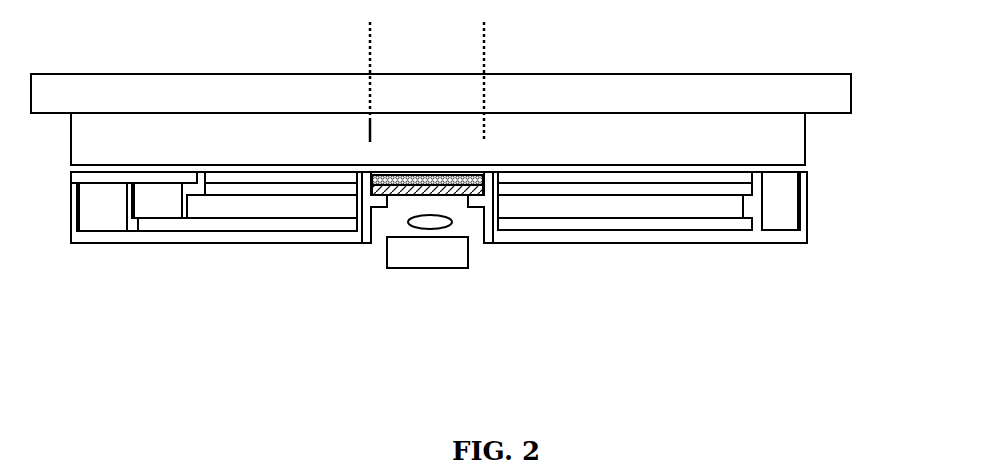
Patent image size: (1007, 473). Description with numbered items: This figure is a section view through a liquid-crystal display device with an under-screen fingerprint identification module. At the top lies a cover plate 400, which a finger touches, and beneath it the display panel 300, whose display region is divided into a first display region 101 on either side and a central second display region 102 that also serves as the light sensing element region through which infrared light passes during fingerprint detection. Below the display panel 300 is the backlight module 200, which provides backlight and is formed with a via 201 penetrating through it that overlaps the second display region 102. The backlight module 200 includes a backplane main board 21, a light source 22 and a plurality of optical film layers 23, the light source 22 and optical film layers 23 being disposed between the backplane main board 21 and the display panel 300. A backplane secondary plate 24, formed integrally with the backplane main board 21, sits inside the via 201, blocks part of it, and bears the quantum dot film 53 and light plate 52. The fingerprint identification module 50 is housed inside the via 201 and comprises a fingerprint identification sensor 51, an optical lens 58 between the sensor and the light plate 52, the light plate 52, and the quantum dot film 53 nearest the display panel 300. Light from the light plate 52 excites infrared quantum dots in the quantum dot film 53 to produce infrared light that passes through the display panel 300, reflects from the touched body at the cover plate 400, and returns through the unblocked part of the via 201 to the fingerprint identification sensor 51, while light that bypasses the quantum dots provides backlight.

The cover plate 400 is at (851, 93).
The display panel 300 is at (805, 142).
The backlight module 200 is at (817, 172).
The via 201 is at (423, 205).
The first display region 101 is at (370, 40).
The second display region 102 is at (484, 52).
The backplane main board 21 is at (100, 243).
The light source 22 is at (160, 210).
The optical film layers 23 is at (227, 208).
The backplane secondary plate 24 is at (377, 203).
The fingerprint identification module 50 is at (454, 266).
The fingerprint identification sensor 51 is at (427, 278).
The light plate 52 is at (447, 188).
The quantum dot film 53 is at (473, 178).
The optical lens 58 is at (427, 223).